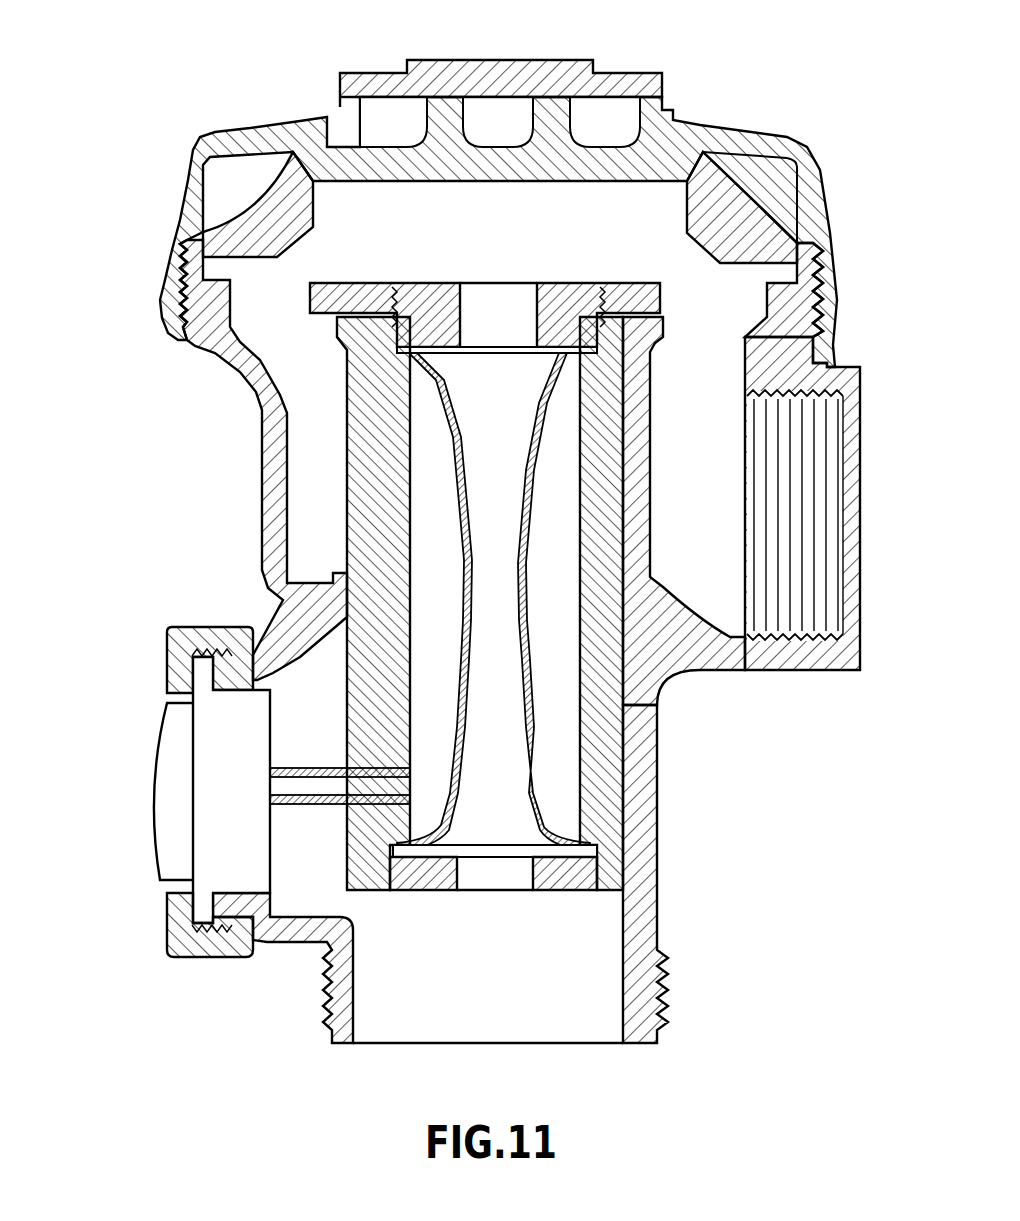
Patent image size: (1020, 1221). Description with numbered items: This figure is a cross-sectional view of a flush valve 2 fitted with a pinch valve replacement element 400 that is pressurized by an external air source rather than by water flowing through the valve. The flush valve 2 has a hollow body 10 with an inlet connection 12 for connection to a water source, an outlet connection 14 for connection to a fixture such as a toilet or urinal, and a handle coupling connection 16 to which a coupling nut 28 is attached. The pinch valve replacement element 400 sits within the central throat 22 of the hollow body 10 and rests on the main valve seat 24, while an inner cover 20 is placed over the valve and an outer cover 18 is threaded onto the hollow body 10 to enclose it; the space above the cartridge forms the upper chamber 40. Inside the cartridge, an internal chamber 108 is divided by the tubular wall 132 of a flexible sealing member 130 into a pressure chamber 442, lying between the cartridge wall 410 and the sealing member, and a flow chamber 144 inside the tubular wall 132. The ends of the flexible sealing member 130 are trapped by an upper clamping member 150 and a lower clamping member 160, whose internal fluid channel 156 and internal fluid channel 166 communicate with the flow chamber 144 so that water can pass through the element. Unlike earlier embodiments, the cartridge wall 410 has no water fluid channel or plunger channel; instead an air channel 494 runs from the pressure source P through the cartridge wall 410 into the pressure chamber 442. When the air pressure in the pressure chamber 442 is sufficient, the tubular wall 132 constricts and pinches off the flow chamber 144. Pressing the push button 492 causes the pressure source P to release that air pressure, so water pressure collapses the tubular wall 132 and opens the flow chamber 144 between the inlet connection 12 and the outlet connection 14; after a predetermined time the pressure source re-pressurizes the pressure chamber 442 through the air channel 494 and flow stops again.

The flush valve 2 is at (135, 215).
The pinch valve replacement element 400 is at (381, 245).
The upper chamber 40 is at (340, 197).
The outer cover 18 is at (740, 132).
The inner cover 20 is at (549, 568).
The internal fluid channel 156 is at (508, 298).
The upper clamping member 150 is at (485, 284).
The main valve seat 24 is at (663, 325).
The pressure chamber 442 is at (427, 390).
The flow chamber 144 is at (406, 603).
The central throat 22 is at (413, 463).
The inlet connection 12 is at (840, 542).
The air channel 494 is at (303, 768).
The push button 492 is at (152, 762).
The cartridge wall 410 is at (563, 605).
The internal chamber 108 is at (497, 653).
The flexible sealing member 130 is at (535, 722).
The tubular wall 132 is at (560, 765).
The handle coupling connection 16 is at (258, 915).
The lower clamping member 160 is at (565, 880).
The internal fluid channel 166 is at (493, 893).
The hollow body 10 is at (666, 938).
The coupling nut 28 is at (207, 947).
The outlet connection 14 is at (573, 1023).